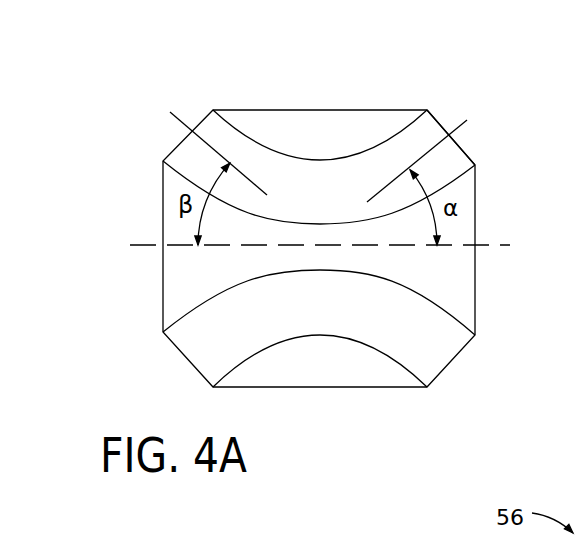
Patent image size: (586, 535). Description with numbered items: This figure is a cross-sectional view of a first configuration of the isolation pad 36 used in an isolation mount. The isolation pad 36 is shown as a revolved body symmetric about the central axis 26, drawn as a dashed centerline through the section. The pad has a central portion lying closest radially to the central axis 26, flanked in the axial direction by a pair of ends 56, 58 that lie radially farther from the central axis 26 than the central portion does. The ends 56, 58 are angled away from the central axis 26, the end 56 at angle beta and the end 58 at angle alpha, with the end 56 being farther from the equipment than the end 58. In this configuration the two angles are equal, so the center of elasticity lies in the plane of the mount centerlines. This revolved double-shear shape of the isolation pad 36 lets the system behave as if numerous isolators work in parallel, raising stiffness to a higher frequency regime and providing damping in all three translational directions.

The central axis 26 is at (493, 247).
The isolation pad 36 is at (450, 160).
The end 56 is at (193, 113).
The end 58 is at (452, 113).